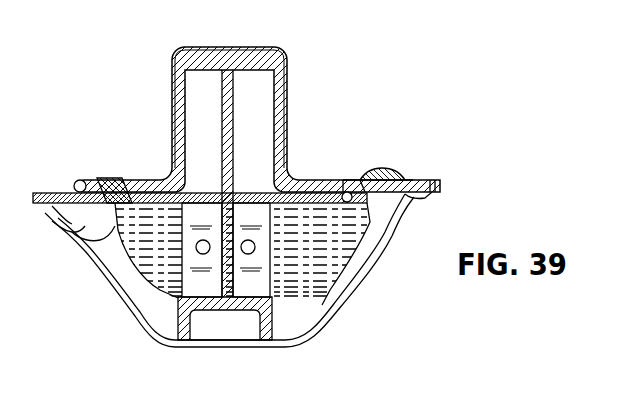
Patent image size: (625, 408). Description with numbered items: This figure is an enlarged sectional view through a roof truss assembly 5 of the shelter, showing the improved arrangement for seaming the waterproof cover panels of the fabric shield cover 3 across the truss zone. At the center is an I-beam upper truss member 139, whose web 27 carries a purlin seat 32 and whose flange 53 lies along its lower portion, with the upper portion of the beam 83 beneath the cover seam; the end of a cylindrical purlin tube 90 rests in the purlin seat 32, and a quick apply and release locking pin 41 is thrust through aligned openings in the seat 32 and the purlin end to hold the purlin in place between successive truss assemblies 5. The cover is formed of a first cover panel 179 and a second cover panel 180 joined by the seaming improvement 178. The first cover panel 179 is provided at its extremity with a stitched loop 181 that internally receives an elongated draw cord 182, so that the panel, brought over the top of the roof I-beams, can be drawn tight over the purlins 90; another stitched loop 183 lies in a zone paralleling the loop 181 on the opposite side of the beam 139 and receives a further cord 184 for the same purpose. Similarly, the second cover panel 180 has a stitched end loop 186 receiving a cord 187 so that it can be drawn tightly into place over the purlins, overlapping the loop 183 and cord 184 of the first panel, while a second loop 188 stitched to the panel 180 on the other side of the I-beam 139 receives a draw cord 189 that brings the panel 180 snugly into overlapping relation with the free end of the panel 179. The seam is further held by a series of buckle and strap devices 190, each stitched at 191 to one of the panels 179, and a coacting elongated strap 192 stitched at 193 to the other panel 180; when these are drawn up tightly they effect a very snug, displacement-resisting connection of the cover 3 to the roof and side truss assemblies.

The fabric shield cover 3 is at (155, 165).
The roof truss assembly 5 is at (170, 315).
The web 27 is at (225, 108).
The purlin seat 32 is at (255, 268).
The locking pin 41 is at (248, 240).
The flange 53 is at (198, 333).
The dome top wall 83 is at (253, 60).
The purlin tube 90 is at (147, 292).
The I-beam upper truss member 139 is at (235, 130).
The seaming improvement 178 is at (290, 165).
The first cover panel 179 is at (281, 90).
The second cover panel 180 is at (284, 137).
The stitched loop 181 is at (383, 214).
The draw cord 182 is at (367, 178).
The stitched loop 183 is at (131, 152).
The cord 184 is at (104, 271).
The stitched end loop 186 is at (86, 178).
The cord 187 is at (76, 212).
The second loop 188 is at (385, 170).
The draw cord 189 is at (405, 200).
The buckle and strap device 190 is at (78, 240).
The stitching 191 is at (44, 193).
The elongated strap 192 is at (355, 290).
The stitching 193 is at (441, 187).